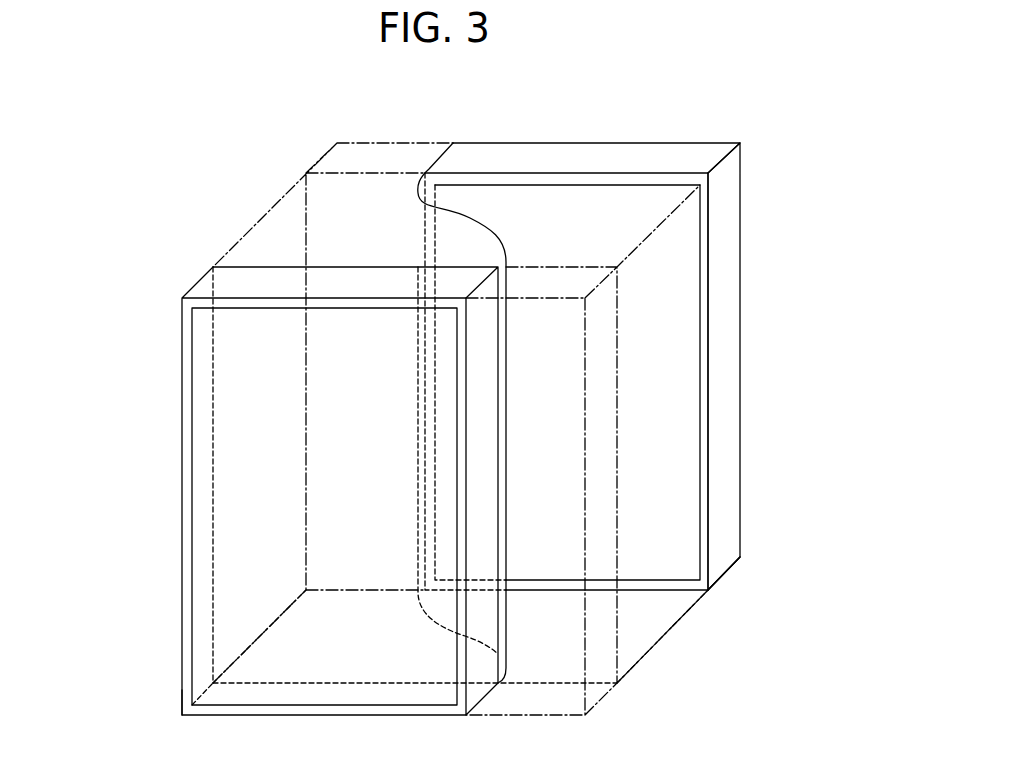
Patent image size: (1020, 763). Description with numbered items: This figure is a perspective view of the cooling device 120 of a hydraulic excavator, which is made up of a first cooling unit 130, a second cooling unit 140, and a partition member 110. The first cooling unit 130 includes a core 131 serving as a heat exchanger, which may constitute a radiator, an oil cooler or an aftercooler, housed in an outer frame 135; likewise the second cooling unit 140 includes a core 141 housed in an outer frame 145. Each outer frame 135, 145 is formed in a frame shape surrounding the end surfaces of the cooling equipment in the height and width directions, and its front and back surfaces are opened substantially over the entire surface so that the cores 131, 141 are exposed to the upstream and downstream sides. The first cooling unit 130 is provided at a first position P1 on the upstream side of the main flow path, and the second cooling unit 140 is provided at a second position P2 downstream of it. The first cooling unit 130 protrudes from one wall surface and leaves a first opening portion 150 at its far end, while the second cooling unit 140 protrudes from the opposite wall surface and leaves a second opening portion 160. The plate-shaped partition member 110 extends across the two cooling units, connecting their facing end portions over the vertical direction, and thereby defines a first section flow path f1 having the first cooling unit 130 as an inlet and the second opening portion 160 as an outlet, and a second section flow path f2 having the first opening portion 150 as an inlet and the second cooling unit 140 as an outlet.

The partition member 110 is at (465, 243).
The cooling device 120 is at (551, 359).
The first cooling unit 130 is at (317, 491).
The core 131 is at (272, 506).
The outer frame 135 is at (222, 283).
The second cooling unit 140 is at (657, 366).
The core 141 is at (682, 235).
The outer frame 145 is at (822, 203).
The first opening portion 150 is at (610, 433).
The second opening portion 160 is at (362, 143).
The first position P1 is at (182, 698).
The second position P2 is at (722, 577).
The first section flow path f1 is at (300, 642).
The second section flow path f2 is at (560, 640).